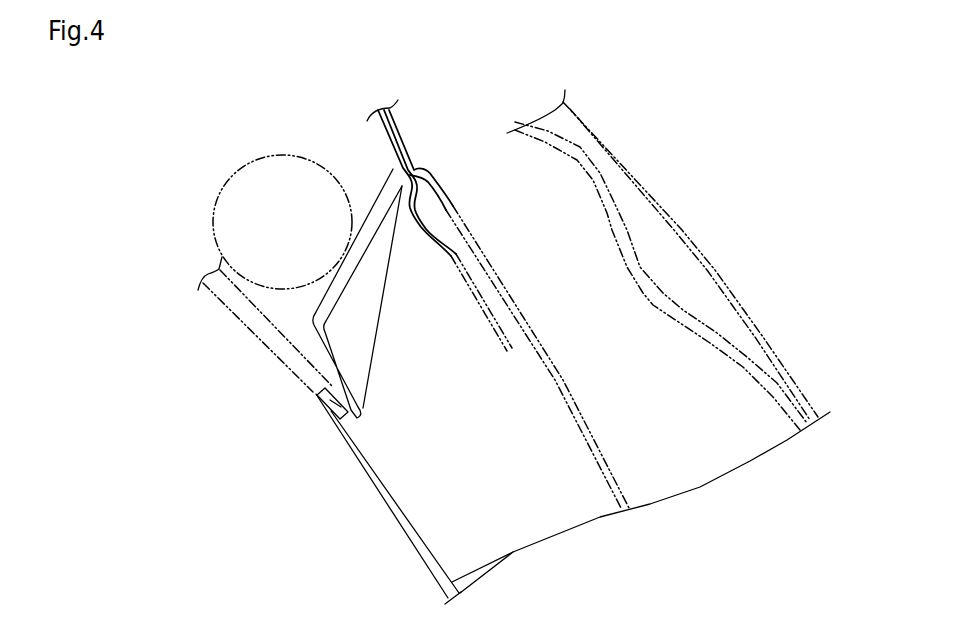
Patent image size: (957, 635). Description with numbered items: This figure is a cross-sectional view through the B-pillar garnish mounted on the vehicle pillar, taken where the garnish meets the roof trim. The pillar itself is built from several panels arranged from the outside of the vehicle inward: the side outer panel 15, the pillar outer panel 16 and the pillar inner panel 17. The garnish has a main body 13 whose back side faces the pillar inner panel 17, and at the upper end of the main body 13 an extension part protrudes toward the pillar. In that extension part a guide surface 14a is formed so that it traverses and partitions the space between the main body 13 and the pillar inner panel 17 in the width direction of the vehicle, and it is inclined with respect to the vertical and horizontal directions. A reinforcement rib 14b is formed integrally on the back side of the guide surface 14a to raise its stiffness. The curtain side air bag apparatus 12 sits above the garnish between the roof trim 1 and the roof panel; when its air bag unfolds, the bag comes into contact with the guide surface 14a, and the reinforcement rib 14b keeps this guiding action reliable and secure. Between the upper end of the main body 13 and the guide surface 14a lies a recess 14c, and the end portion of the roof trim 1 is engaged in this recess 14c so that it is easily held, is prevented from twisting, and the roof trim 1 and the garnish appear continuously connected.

The roof trim 1 is at (247, 310).
The curtain side air bag apparatus 12 is at (255, 188).
The main body 13 is at (390, 502).
The guide surface 14a is at (380, 197).
The reinforcement rib 14b is at (370, 308).
The recess 14c is at (343, 413).
The side outer panel 15 is at (677, 227).
The pillar outer panel 16 is at (773, 407).
The pillar inner panel 17 is at (605, 462).